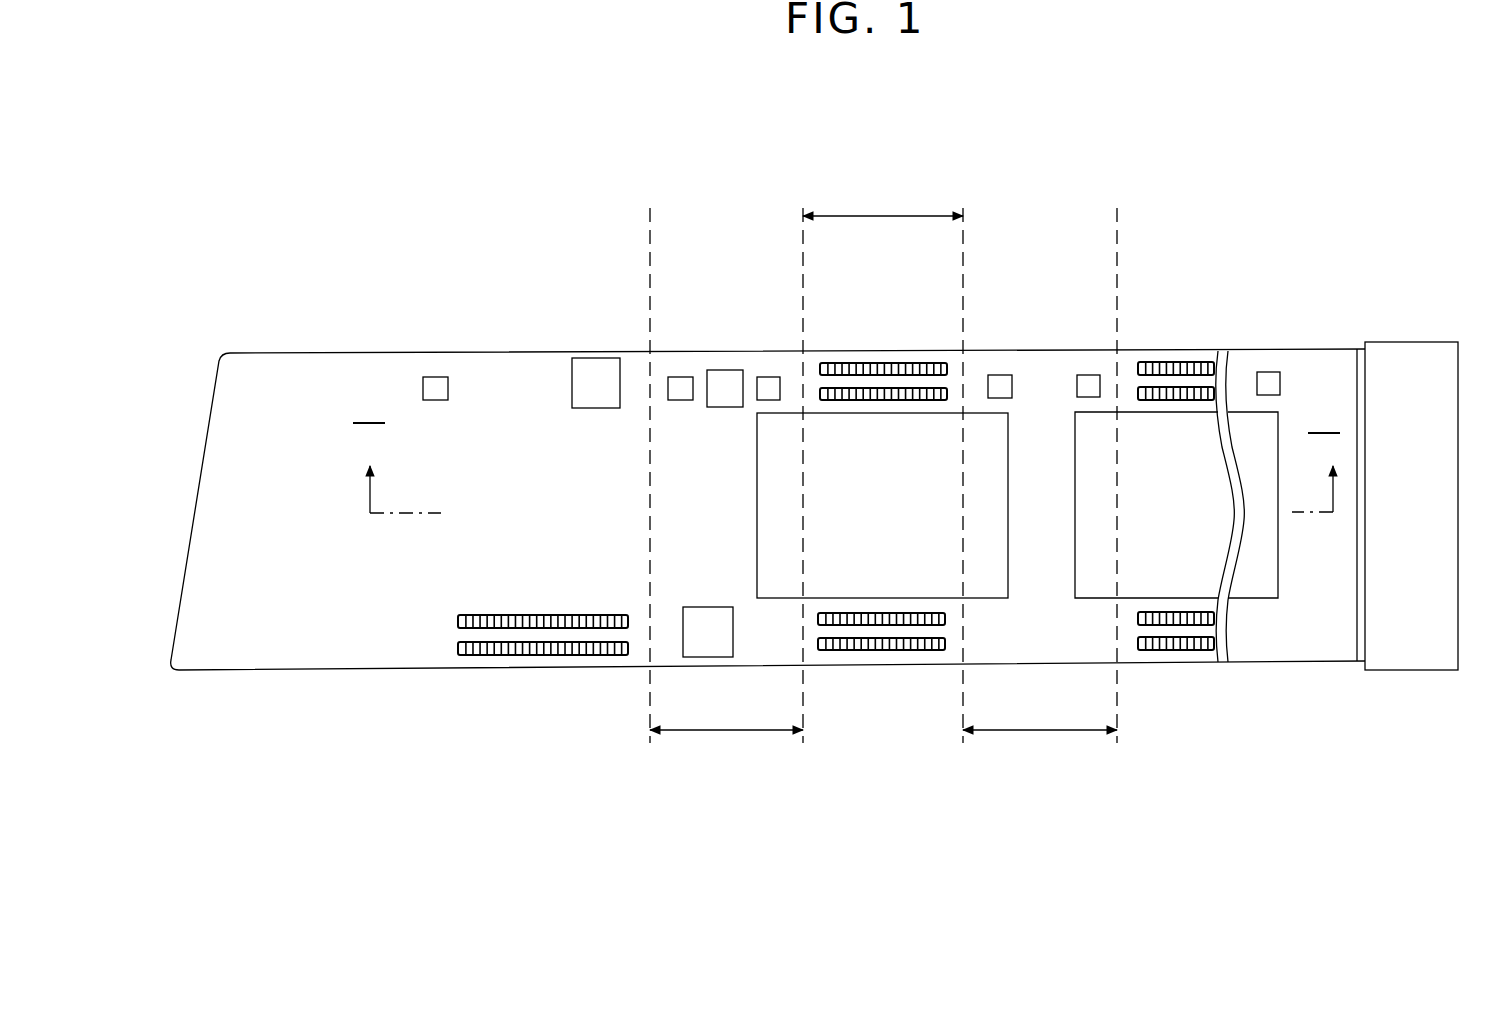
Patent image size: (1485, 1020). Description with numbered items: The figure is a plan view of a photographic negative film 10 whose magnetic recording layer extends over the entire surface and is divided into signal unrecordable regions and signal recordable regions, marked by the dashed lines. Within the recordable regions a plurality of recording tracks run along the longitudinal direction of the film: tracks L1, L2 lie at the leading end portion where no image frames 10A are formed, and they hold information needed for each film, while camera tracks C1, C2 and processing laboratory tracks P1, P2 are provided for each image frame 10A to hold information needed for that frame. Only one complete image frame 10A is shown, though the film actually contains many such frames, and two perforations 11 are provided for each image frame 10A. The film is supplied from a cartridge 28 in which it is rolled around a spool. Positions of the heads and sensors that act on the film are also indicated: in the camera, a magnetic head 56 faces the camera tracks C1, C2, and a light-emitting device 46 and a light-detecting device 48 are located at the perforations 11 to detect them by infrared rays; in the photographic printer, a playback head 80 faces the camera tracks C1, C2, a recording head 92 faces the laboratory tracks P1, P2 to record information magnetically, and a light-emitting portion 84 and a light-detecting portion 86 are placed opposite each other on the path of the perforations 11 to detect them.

The photographic negative film 10 is at (343, 262).
The image frame 10A is at (1008, 580).
The perforations 11 is at (445, 397).
The cartridge 28 is at (1405, 670).
The light-emitting device 46 is at (735, 370).
The light-detecting device 48 is at (732, 327).
The magnetic head 56 is at (708, 607).
The playback head 80 is at (708, 579).
The light-emitting portion 84 is at (747, 327).
The light-detecting portion 86 is at (732, 327).
The recording head 92 is at (593, 408).
The processing laboratory track P1 is at (862, 363).
The processing laboratory track P2 is at (868, 402).
The camera track C1 is at (867, 650).
The camera track C2 is at (862, 613).
The track L1 is at (458, 648).
The track L2 is at (458, 620).